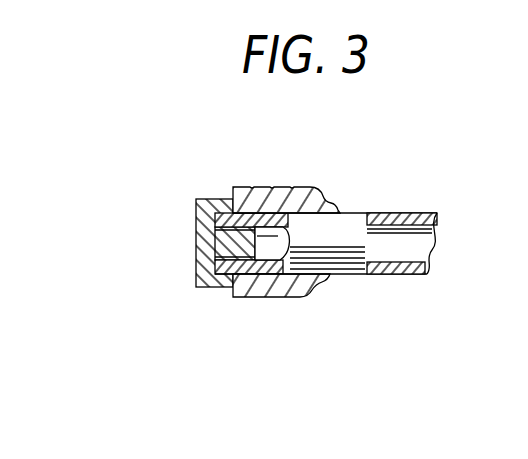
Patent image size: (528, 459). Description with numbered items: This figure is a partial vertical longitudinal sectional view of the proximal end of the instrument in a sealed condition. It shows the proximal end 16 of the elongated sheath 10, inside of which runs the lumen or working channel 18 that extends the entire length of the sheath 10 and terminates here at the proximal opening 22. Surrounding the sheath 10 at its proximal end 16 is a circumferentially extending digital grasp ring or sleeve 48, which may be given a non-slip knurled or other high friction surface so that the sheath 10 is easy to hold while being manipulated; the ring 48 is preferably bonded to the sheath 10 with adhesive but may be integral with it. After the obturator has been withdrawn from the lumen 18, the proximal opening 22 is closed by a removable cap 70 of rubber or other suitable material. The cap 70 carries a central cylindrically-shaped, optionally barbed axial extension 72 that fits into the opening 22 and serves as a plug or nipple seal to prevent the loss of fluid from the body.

The sheath 10 is at (350, 241).
The proximal end 16 is at (405, 213).
The lumen or working channel 18 is at (402, 243).
The proximal opening 22 is at (217, 262).
The digital grasp ring or sleeve 48 is at (251, 189).
The removable cap 70 is at (195, 222).
The axial extension 72 is at (241, 260).